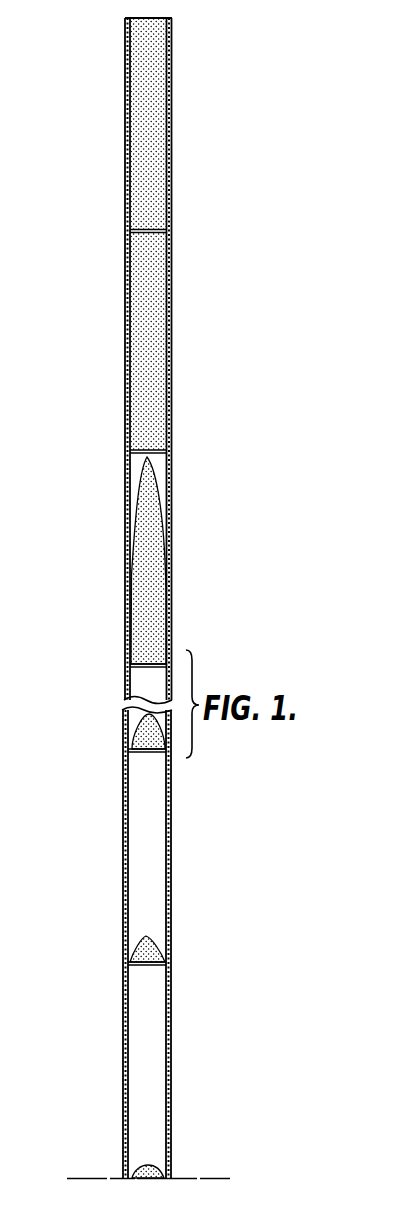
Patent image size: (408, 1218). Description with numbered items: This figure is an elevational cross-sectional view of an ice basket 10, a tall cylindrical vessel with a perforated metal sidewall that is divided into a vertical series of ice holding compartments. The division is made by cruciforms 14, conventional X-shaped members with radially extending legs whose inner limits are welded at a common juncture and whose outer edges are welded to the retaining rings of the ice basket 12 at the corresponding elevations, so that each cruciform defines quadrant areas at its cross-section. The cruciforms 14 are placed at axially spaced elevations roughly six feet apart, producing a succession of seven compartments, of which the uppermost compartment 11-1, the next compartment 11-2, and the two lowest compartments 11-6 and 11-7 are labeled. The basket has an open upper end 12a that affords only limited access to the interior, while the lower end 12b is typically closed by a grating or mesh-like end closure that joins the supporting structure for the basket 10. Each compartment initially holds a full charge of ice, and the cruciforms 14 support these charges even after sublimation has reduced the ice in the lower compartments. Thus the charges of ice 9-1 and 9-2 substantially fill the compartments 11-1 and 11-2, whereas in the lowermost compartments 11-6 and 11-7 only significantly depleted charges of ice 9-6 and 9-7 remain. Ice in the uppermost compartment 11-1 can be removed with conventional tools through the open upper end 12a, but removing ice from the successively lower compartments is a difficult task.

The ice basket 10 is at (150, 598).
The ice basket 12 is at (170, 150).
The open upper end 12a is at (173, 18).
The lower end 12b is at (170, 1178).
The cruciforms 14 is at (157, 233).
The charge of ice 9-1 is at (158, 71).
The charge of ice 9-2 is at (132, 305).
The charge of ice 9-6 is at (157, 943).
The charge of ice 9-7 is at (144, 1165).
The compartment 11-1 is at (155, 190).
The compartment 11-2 is at (158, 355).
The compartment 11-6 is at (150, 832).
The compartment 11-7 is at (150, 1052).